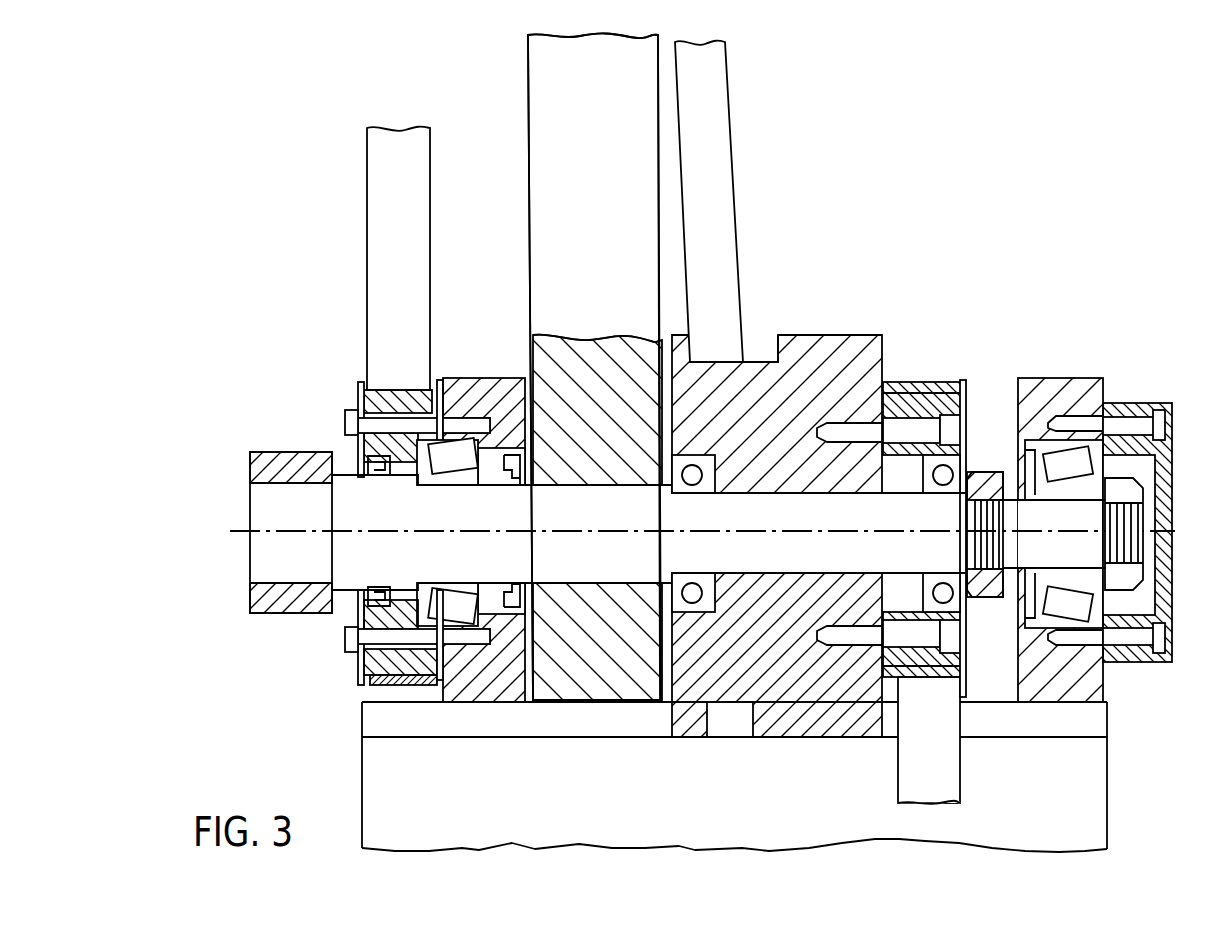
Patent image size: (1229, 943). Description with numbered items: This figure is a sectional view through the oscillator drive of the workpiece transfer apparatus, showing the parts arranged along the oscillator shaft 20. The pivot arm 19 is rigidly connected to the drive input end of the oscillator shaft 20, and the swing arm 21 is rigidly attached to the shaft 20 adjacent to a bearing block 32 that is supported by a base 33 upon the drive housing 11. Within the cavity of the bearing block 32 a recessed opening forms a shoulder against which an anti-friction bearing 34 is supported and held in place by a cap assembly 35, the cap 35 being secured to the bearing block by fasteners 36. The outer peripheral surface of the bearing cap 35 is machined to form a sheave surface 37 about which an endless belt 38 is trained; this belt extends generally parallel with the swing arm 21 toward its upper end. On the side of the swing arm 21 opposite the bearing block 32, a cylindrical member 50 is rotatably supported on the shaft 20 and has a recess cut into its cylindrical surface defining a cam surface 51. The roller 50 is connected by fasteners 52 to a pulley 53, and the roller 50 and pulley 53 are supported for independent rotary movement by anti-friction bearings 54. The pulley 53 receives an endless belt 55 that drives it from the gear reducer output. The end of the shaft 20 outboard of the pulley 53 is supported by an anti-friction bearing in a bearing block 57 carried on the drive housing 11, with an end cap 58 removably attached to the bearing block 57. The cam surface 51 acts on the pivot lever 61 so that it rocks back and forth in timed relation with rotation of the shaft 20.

The drive housing 11 is at (375, 772).
The pivot arm 19 is at (270, 452).
The oscillator shaft 20 is at (520, 516).
The swing arm 21 is at (533, 197).
The bearing block 32 is at (485, 378).
The base 33 is at (500, 697).
The anti-friction bearing 34 is at (448, 590).
The cap assembly 35 is at (350, 440).
The fasteners 36 is at (345, 645).
The sheave surface 37 is at (392, 390).
The endless belt 38 is at (375, 195).
The cylindrical member 50 is at (845, 345).
The cam surface 51 is at (766, 343).
The fasteners 52 is at (960, 435).
The pulley 53 is at (953, 380).
The anti-friction bearings 54 is at (712, 490).
The endless belt 55 is at (915, 385).
The bearing block 57 is at (1065, 378).
The end cap 58 is at (1140, 403).
The pivot lever 61 is at (723, 192).